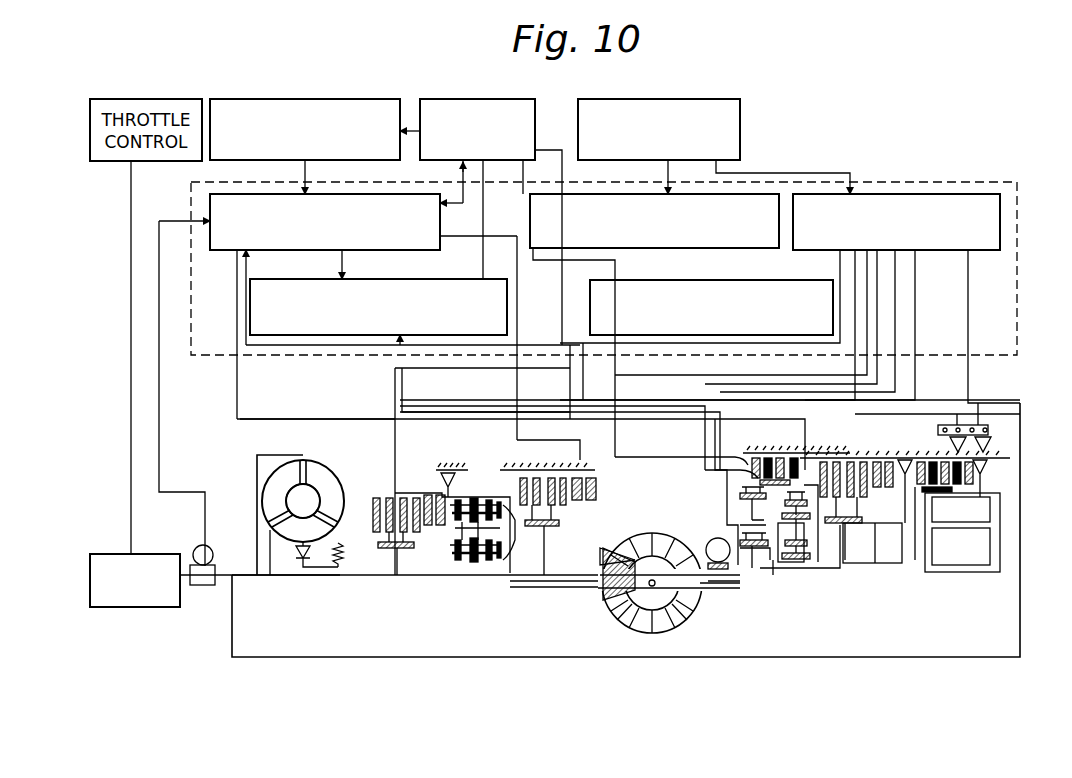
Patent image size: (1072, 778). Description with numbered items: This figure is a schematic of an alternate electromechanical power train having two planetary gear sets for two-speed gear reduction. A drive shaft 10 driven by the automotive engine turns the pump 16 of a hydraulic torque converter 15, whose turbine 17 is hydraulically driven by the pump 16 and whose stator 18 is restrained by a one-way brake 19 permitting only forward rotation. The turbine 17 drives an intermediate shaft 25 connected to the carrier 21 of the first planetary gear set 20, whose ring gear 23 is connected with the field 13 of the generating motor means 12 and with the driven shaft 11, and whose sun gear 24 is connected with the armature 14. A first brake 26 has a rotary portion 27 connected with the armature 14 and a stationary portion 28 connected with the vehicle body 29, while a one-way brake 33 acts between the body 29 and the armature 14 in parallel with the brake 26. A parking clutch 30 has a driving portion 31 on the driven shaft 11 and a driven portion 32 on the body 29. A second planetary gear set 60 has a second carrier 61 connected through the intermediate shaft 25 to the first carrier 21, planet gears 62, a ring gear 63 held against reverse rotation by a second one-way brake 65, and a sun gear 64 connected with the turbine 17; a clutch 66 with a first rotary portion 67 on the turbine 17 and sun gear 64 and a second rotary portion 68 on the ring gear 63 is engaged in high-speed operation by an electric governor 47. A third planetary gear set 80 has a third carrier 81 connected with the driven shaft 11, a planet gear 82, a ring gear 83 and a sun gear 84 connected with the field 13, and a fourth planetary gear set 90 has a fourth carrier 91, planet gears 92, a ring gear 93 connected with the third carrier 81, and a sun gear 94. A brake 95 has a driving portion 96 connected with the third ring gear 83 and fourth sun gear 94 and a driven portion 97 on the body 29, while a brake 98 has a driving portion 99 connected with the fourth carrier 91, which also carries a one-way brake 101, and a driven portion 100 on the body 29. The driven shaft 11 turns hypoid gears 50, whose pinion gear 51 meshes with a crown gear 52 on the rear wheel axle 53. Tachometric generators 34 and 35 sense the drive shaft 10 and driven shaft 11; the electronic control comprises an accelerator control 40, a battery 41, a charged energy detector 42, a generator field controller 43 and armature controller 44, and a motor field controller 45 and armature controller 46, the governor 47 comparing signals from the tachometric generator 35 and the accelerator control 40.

The drive shaft 10 is at (185, 612).
The driven shaft 11 is at (707, 583).
The generating motor means 12 is at (989, 549).
The field element 13 is at (988, 507).
The armature 14 is at (988, 540).
The hydraulic torque converter 15 is at (303, 610).
The pump 16 is at (310, 470).
The turbine 17 is at (262, 486).
The stator 18 is at (318, 519).
The one-way brake 19 is at (292, 556).
The planetary gear set 20 is at (480, 563).
The carrier 21 is at (508, 540).
The ring gear 23 is at (502, 470).
The sun gear 24 is at (512, 583).
The intermediate shaft 25 is at (365, 578).
The first brake 26 is at (548, 583).
The rotary portion 27 is at (560, 523).
The stationary portion 28 is at (540, 472).
The body 29 is at (576, 472).
The second clutch 30 is at (932, 510).
The driving portion 31 is at (910, 565).
The driven portion 32 is at (995, 452).
The one-way brake 33 is at (990, 470).
The first governor 34 is at (194, 550).
The second governor 35 is at (705, 540).
The accelerator control 40 is at (660, 98).
The battery 41 is at (470, 98).
The charged energy detector 42 is at (296, 98).
The field controller 43 is at (224, 252).
The armature controller 44 is at (446, 277).
The field controller 45 is at (781, 212).
The armature controller 46 is at (678, 279).
The electric governor 47 is at (942, 252).
The hypoid gears 50 is at (669, 612).
The hypoid pinion gear 51 is at (605, 590).
The crown gear 52 is at (622, 640).
The rear wheel axle 53 is at (690, 615).
The second planetary gear set 60 is at (474, 585).
The second carrier 61 is at (456, 535).
The planet gears 62 is at (432, 494).
The ring gear 63 is at (456, 476).
The sun gear 64 is at (462, 563).
The second one-way brake 65 is at (440, 470).
The clutch 66 is at (400, 570).
The first rotary portion 67 is at (345, 550).
The second rotary portion 68 is at (386, 496).
The third planetary gear set 80 is at (732, 527).
The third carrier 81 is at (738, 540).
The third planet gear 82 is at (740, 507).
The third ring gear 83 is at (740, 493).
The third sun gear 84 is at (757, 565).
The fourth planetary gear set 90 is at (795, 565).
The fourth carrier 91 is at (772, 580).
The fourth planet gears 92 is at (808, 560).
The fourth ring gear 93 is at (805, 540).
The fourth sun gear 94 is at (800, 575).
The brake 95 is at (681, 467).
The driving portion 96 is at (719, 462).
The driven portion 97 is at (780, 455).
The brake 98 is at (851, 565).
The driving portion 99 is at (872, 542).
The driven portion 100 is at (848, 460).
The one-way brake 101 is at (858, 500).